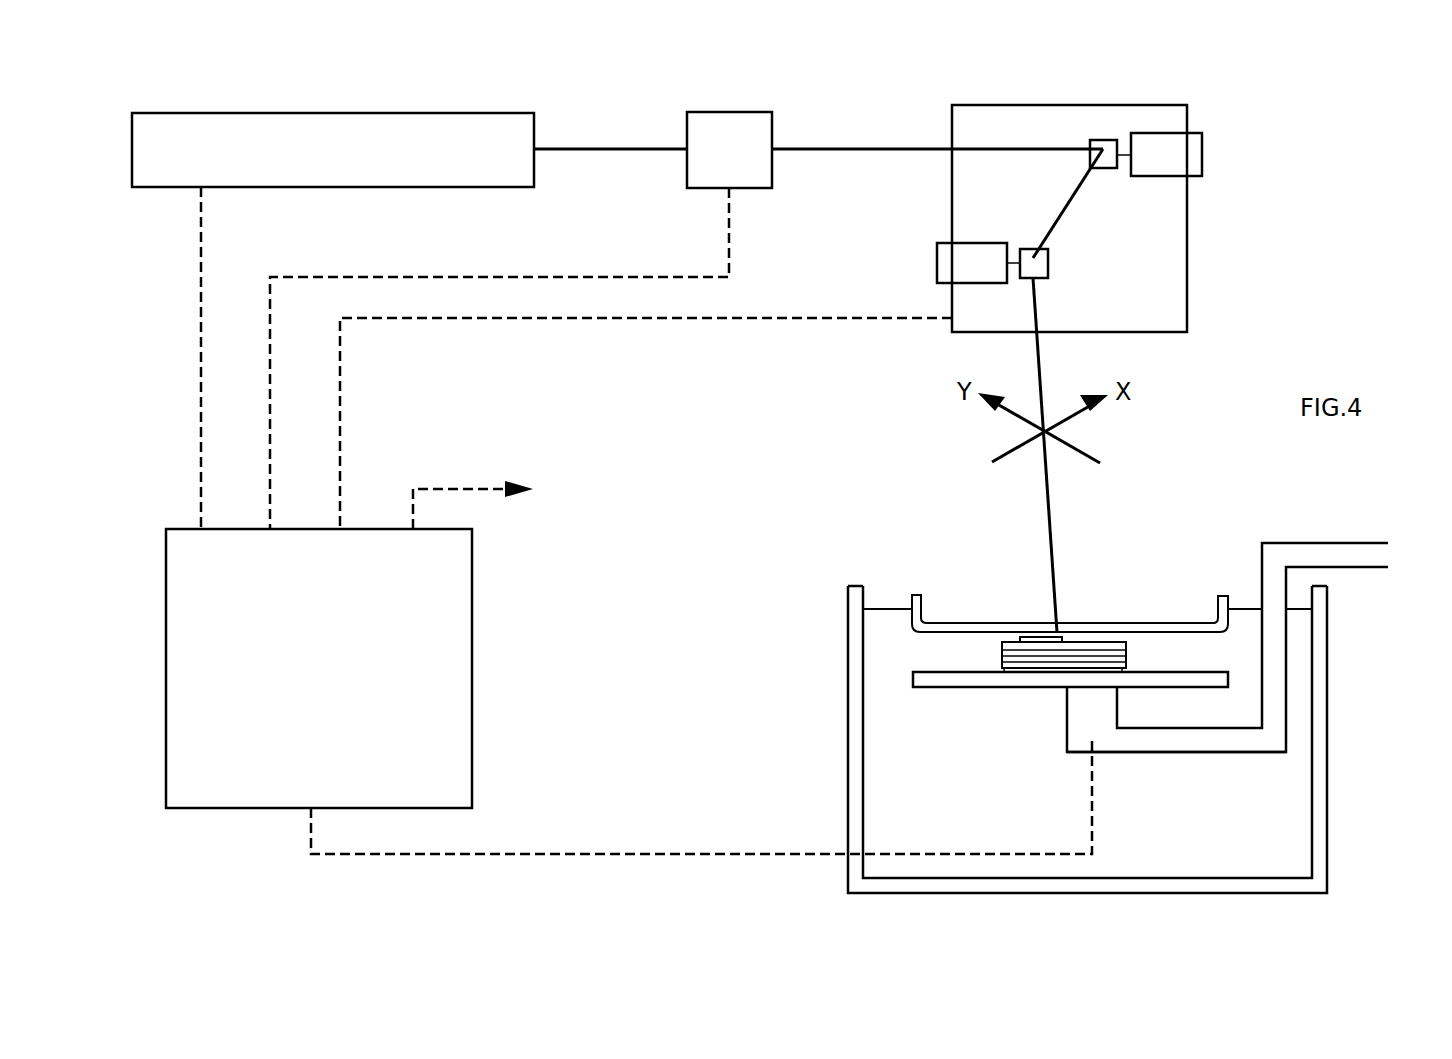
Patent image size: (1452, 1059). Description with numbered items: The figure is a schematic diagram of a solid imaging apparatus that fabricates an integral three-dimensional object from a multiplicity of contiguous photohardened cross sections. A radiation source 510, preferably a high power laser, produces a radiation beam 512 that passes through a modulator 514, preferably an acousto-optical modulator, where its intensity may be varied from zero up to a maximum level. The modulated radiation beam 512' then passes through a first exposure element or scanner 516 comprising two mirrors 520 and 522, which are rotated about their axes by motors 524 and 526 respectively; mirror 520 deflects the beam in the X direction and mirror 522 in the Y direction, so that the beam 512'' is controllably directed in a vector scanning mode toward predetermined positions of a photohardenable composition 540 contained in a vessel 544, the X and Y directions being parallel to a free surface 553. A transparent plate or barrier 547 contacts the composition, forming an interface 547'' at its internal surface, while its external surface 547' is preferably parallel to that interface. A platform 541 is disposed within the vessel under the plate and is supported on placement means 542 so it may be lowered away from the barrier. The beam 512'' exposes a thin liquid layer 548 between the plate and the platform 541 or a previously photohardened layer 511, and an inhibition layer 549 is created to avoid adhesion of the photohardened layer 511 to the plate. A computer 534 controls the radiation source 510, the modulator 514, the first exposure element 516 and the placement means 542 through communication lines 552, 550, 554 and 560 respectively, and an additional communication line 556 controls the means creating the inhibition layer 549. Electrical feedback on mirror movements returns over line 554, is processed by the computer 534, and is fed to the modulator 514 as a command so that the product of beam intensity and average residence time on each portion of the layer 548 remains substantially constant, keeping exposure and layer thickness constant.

The radiation source 510 is at (360, 113).
The radiation beam 512 is at (610, 126).
The modulated radiation beam 512' is at (937, 122).
The deflected radiation beam 512'' is at (1091, 455).
The modulator 514 is at (738, 112).
The first exposure element or scanner 516 is at (1187, 285).
The mirror 520 is at (1033, 250).
The mirror 522 is at (1103, 140).
The motor 524 is at (937, 270).
The motor 526 is at (1203, 150).
The computer 534 is at (472, 708).
The photohardenable composition 540 is at (897, 770).
The platform 541 is at (1205, 680).
The placement means 542 is at (1235, 745).
The vessel 544 is at (847, 692).
The transparent plate or barrier 547 is at (1075, 558).
The external surface 547' is at (1100, 544).
The interface 547'' is at (1123, 577).
The thin layer 548 is at (1078, 640).
The inhibition layer 549 is at (1035, 638).
The photohardened layer 511 is at (1002, 660).
The communication line 550 is at (400, 277).
The communication line 552 is at (201, 312).
The free surface 553 is at (1258, 608).
The communication line 554 is at (840, 318).
The additional communication line 556 is at (462, 489).
The communication line 560 is at (493, 854).